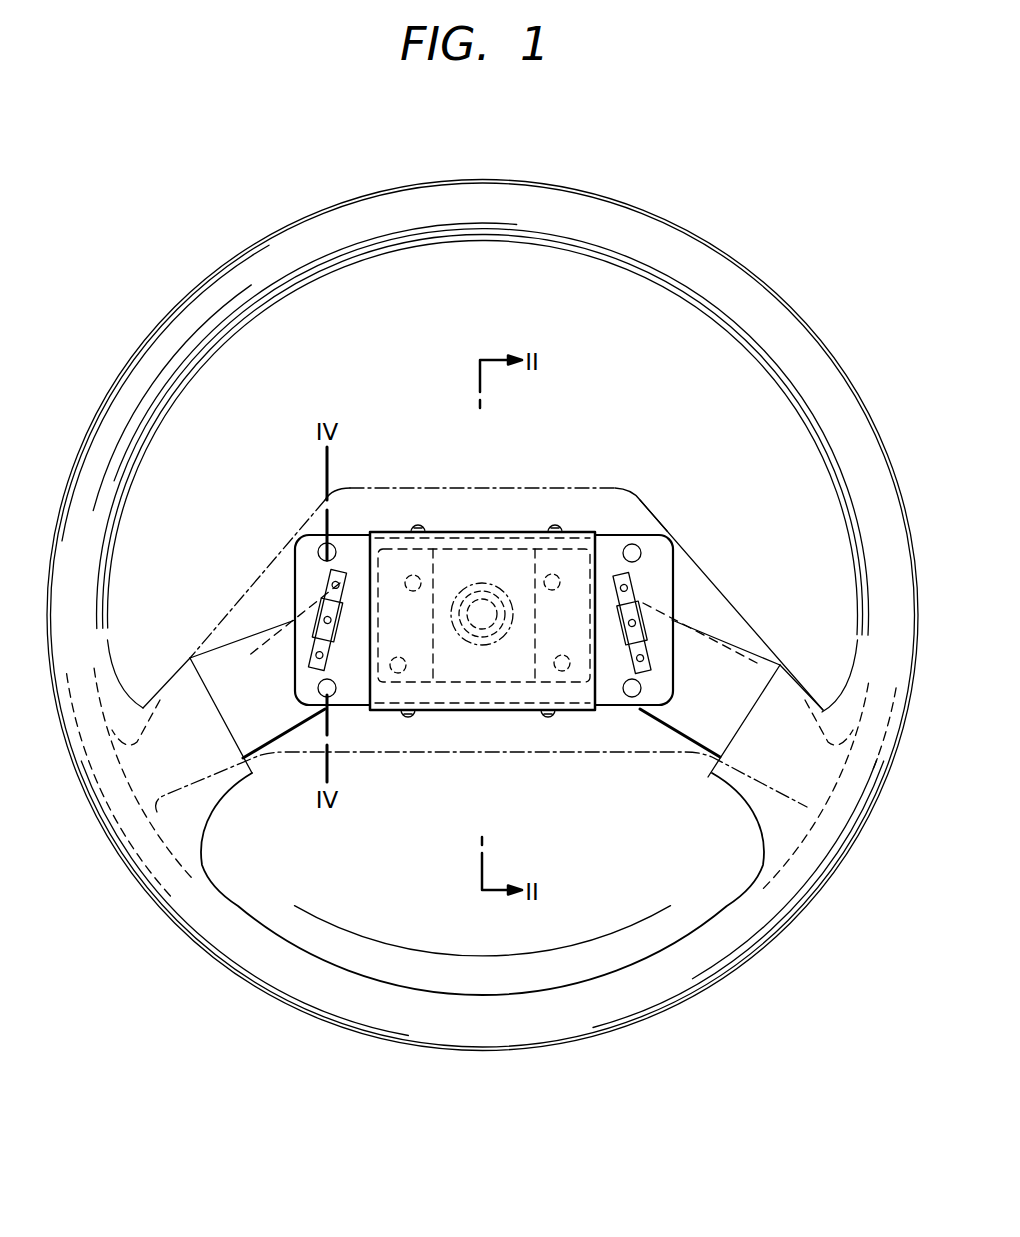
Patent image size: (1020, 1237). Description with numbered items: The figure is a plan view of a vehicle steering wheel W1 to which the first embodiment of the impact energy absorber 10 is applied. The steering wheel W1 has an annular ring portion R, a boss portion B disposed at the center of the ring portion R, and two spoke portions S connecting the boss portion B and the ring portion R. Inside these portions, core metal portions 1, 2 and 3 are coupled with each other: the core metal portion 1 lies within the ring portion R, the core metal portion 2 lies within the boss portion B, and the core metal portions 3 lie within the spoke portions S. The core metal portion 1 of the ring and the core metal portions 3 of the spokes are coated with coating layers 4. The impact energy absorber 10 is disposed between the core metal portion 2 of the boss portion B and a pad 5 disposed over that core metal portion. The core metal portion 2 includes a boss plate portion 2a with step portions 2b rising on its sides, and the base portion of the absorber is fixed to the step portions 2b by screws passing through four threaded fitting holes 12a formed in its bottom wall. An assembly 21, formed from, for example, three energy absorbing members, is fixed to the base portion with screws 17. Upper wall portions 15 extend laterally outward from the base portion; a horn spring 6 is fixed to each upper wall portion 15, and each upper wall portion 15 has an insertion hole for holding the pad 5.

The ring portion R is at (330, 230).
The steering wheel W1 is at (792, 230).
The core metal portion 1 is at (110, 813).
The core metal portion 2 is at (463, 540).
The boss plate portion 2a is at (492, 535).
The step portions 2b is at (607, 567).
The core metal portions 3 is at (183, 727).
The coating layers 4 is at (713, 778).
The pad 5 is at (648, 472).
The impact energy absorber 10 is at (608, 500).
The fitting holes 12a is at (408, 576).
The upper wall portions 15 is at (302, 590).
The screws 17 is at (418, 523).
The assembly 21 is at (512, 720).
The boss portion B is at (542, 400).
The spoke portions S is at (250, 832).
The horn spring 6 is at (338, 580).